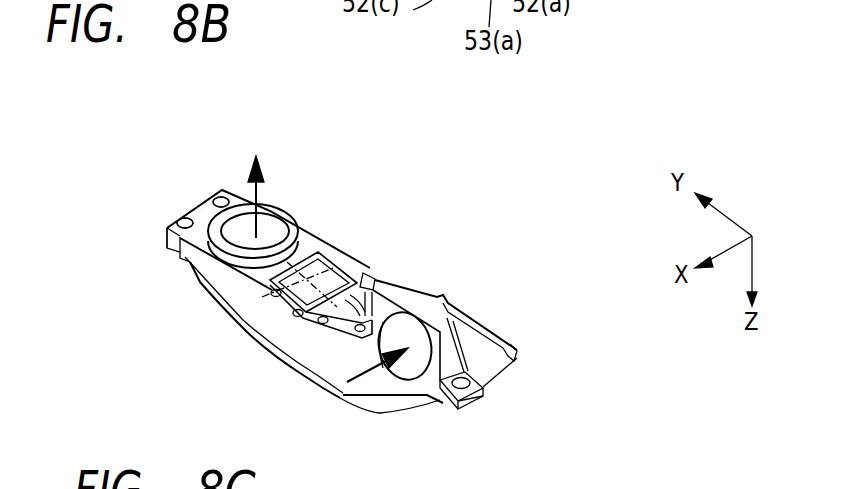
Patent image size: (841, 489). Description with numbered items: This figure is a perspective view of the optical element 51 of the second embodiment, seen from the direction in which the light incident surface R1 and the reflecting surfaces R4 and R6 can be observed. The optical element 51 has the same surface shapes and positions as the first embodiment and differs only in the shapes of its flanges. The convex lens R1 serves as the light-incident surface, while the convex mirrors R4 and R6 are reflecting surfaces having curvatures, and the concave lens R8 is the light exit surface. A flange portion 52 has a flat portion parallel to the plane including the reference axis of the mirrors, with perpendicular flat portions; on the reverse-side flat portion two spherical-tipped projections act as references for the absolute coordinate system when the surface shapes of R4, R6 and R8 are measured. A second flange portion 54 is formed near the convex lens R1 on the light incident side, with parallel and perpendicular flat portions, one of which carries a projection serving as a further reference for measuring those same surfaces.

The flange portion 52 is at (167, 256).
The optical element 51 is at (244, 310).
The convex lens R1 is at (410, 362).
The convex mirror R4 is at (367, 280).
The convex mirror R6 is at (333, 258).
The concave lens R8 is at (278, 227).
The flange portion 54 is at (471, 374).